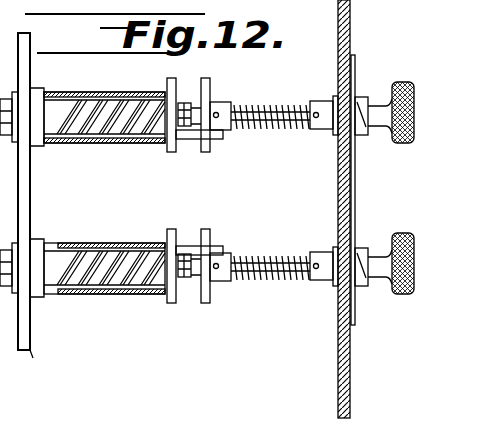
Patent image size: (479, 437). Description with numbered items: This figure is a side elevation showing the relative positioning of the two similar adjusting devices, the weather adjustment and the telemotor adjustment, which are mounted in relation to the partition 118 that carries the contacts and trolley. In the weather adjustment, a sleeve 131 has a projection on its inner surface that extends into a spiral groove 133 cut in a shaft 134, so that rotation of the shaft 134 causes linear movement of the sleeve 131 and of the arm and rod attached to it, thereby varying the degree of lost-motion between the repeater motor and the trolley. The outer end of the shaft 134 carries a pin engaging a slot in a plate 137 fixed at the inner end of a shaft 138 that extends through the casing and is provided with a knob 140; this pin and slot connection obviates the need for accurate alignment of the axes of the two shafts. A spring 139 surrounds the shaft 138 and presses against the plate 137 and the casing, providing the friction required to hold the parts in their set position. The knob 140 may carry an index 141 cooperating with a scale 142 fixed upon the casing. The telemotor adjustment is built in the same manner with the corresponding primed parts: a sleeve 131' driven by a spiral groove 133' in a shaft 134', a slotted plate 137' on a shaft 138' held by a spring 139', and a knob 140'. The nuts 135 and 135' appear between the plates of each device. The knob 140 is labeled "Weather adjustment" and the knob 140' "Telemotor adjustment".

The partition 118 is at (43, 213).
The sleeve 131 is at (104, 101).
The sleeve 131' is at (104, 250).
The spiral groove 133 is at (100, 140).
The spiral groove 133' is at (105, 293).
The shaft 134 is at (104, 81).
The shaft 134' is at (107, 229).
The nut 135 is at (166, 138).
The nut (second) 135' is at (200, 238).
The plate 137 is at (201, 103).
The plate 137' is at (195, 285).
The shaft 138 is at (274, 99).
The shaft 138' is at (274, 284).
The spring 139 is at (270, 99).
The spring 139' is at (270, 246).
The knob 140 is at (393, 96).
The knob 140' is at (399, 294).
The index 141 is at (365, 131).
The scale 142 is at (355, 193).